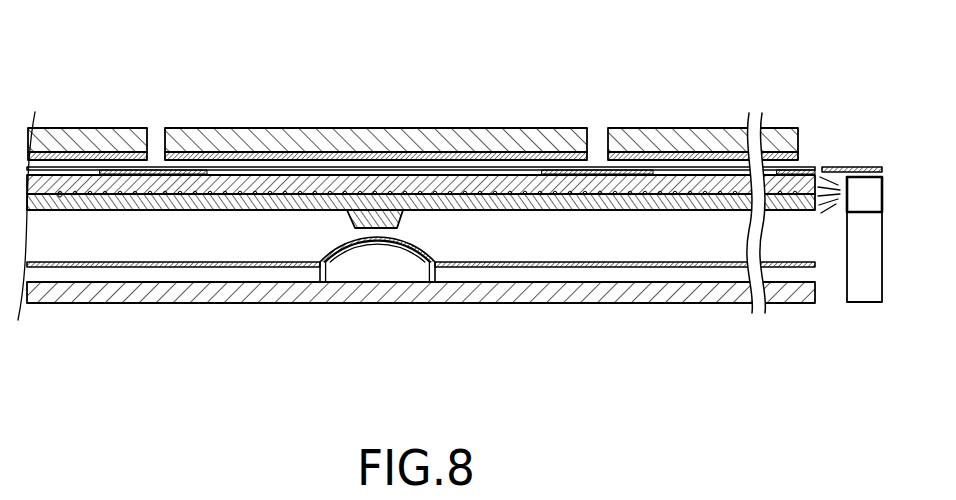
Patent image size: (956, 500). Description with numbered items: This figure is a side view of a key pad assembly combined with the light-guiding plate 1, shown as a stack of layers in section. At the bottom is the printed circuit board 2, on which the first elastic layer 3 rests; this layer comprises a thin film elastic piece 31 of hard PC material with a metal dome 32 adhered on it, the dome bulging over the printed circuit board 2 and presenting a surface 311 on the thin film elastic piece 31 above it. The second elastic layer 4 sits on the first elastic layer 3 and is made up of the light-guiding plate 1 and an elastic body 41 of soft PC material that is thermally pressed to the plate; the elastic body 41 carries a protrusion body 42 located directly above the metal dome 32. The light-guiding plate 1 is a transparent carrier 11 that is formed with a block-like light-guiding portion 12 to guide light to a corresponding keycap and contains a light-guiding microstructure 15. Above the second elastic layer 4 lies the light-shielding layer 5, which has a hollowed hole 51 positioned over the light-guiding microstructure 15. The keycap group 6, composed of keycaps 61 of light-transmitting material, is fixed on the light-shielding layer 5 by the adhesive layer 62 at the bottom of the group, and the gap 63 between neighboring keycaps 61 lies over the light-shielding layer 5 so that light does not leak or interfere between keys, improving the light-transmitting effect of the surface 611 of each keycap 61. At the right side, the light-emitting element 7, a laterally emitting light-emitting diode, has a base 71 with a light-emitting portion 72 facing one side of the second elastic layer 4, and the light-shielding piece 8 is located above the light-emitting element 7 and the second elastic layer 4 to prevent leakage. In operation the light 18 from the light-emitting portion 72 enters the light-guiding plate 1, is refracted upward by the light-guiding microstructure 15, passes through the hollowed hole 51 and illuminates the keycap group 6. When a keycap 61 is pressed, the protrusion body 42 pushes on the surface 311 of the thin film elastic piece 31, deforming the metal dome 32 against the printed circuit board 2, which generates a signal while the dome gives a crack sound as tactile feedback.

The light-guiding plate 1 is at (421, 197).
The carrier 11 is at (626, 178).
The block-like light-guiding portion 12 is at (483, 133).
The light-guiding microstructure 15 is at (530, 210).
The light 18 is at (821, 167).
The printed circuit board 2 is at (533, 293).
The first elastic layer 3 is at (421, 317).
The thin film elastic piece 31 is at (233, 266).
The surface of the thin film elastic piece 311 is at (412, 247).
The metal dome 32 is at (410, 298).
The second elastic layer 4 is at (421, 274).
The elastic body 41 is at (185, 205).
The protrusion body 42 is at (350, 218).
The light-shielding layer 5 is at (598, 175).
The hollowed hole 51 is at (501, 176).
The keycap group 6 is at (413, 83).
The keycap 61 is at (417, 127).
The surface of the keycap 611 is at (357, 160).
The adhesive layer 62 is at (315, 128).
The gap 63 is at (153, 128).
The light-emitting element 7 is at (828, 218).
The base 71 is at (867, 295).
The light-emitting portion 72 is at (831, 167).
The light-shielding piece 8 is at (857, 190).